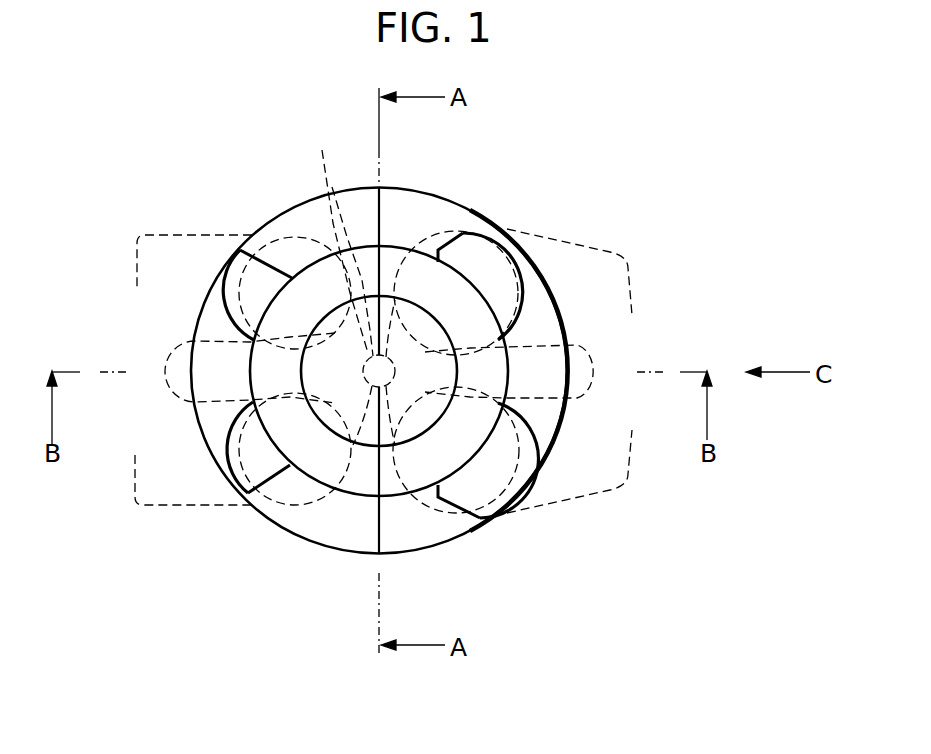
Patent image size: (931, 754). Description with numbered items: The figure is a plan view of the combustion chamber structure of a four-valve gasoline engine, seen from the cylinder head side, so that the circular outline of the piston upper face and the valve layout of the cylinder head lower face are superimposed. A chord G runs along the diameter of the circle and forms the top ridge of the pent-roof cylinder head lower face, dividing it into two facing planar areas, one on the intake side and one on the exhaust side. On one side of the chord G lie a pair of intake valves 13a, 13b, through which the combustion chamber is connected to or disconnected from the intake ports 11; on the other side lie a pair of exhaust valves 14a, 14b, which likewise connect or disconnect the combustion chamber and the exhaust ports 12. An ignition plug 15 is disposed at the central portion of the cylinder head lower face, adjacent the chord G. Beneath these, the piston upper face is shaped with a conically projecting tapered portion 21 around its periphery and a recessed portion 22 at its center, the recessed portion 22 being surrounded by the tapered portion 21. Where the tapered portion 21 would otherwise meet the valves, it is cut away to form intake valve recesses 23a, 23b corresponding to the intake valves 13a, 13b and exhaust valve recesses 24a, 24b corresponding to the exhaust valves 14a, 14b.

The intake ports 11 is at (545, 232).
The exhaust ports 12 is at (193, 235).
The intake valve 13a is at (435, 235).
The intake valve 13b is at (434, 512).
The exhaust valve 14a is at (303, 236).
The exhaust valve 14b is at (319, 507).
The ignition plug 15 is at (340, 240).
The tapered portion 21 is at (538, 317).
The recessed portion 22 is at (313, 421).
The intake valve recess 23a is at (520, 263).
The intake valve recess 23b is at (522, 479).
The exhaust valve recess 24a is at (223, 285).
The exhaust valve recess 24b is at (227, 467).
The chord G is at (378, 232).